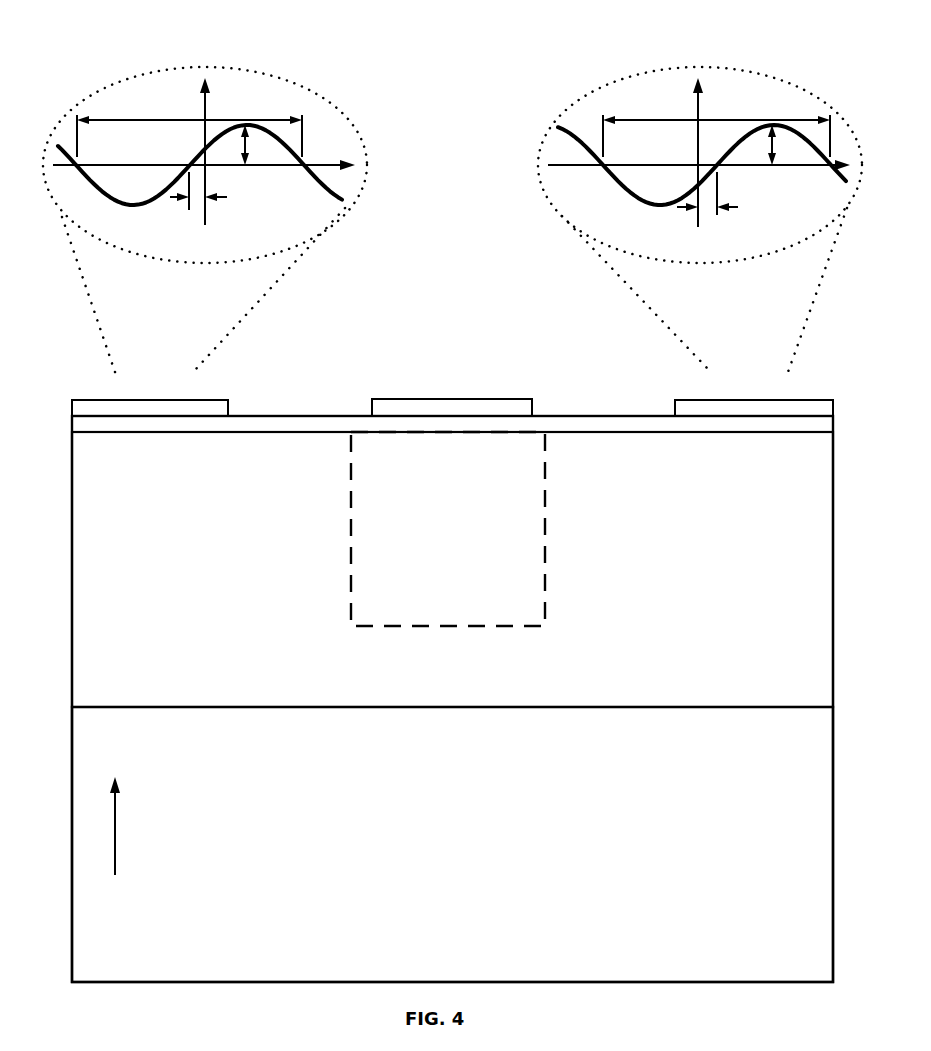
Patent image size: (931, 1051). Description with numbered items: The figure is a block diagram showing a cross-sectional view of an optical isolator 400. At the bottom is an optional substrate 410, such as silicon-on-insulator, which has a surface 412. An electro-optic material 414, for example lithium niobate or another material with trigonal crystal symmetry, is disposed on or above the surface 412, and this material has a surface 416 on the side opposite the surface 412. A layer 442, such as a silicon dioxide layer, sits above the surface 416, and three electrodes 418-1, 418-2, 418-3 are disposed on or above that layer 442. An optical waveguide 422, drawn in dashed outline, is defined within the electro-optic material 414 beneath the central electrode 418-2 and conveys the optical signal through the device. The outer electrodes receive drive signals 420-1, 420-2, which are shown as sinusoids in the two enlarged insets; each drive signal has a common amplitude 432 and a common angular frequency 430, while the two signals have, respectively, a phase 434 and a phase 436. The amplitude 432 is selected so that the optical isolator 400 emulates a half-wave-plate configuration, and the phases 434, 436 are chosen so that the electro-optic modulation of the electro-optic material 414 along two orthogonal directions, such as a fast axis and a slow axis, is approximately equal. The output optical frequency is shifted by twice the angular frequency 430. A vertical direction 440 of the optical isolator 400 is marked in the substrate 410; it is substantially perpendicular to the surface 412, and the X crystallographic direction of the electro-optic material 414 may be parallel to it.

The optical isolator 400 is at (537, 267).
The substrate 410 is at (452, 844).
The surface 412 is at (713, 707).
The electro-optic material 414 is at (452, 569).
The surface 416 is at (797, 433).
The electrode 418-1 is at (160, 407).
The electrode 418-2 is at (390, 410).
The electrode 418-3 is at (692, 408).
The drive signal 420-1 is at (282, 77).
The drive signal 420-2 is at (623, 78).
The optical waveguide 422 is at (448, 529).
The angular frequency 430 is at (185, 100).
The amplitude 432 is at (772, 153).
The phase 434 is at (198, 200).
The phase 436 is at (707, 212).
The vertical direction 440 is at (115, 808).
The layer 442 is at (585, 423).